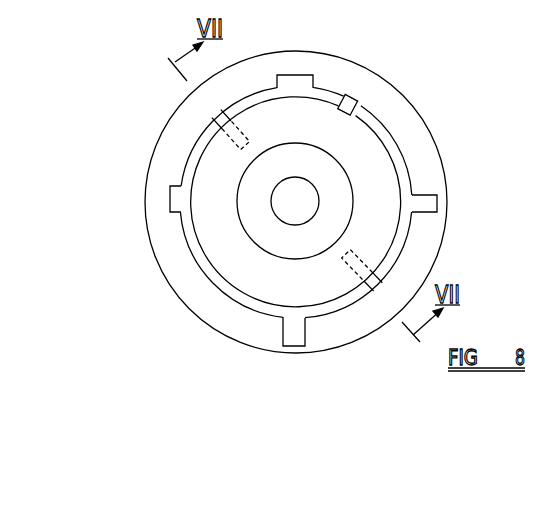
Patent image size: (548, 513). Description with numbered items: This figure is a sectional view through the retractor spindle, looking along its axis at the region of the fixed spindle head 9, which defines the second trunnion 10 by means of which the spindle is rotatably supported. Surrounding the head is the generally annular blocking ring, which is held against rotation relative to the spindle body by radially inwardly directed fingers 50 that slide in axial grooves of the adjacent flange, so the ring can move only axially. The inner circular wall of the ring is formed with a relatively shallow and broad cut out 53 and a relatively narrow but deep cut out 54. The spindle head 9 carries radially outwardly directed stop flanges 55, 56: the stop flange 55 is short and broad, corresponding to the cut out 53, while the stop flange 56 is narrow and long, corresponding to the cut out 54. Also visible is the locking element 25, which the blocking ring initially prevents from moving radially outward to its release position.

The spindle head 9 is at (365, 220).
The second trunnion 10 is at (303, 201).
The locking element 25 is at (215, 112).
The fingers 50 is at (353, 103).
The cut out 53 is at (300, 74).
The cut out 54 is at (282, 333).
The stop flange 55 is at (172, 203).
The stop flange 56 is at (432, 203).